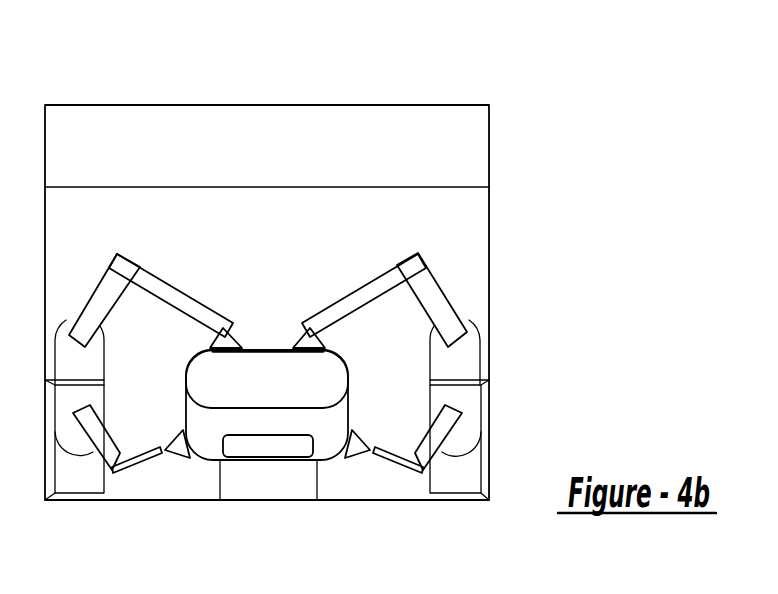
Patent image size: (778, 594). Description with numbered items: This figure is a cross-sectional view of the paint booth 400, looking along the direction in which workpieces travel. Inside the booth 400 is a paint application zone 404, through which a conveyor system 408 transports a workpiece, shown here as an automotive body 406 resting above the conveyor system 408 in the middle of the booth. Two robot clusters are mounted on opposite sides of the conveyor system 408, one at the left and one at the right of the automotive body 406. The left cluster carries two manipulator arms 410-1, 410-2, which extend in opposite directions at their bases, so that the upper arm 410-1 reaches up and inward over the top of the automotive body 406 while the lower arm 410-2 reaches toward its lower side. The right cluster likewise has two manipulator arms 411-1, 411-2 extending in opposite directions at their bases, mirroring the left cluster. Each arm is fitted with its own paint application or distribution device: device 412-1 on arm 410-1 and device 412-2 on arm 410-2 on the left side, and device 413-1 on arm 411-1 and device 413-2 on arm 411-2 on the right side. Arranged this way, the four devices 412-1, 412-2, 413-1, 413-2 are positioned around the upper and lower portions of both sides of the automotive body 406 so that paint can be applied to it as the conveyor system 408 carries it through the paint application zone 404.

The booth 400 is at (405, 105).
The paint application zone 404 is at (125, 223).
The automotive body 406 is at (285, 358).
The conveyor system 408 is at (243, 480).
The manipulator arm 410-1 is at (173, 291).
The manipulator arm 410-2 is at (134, 461).
The manipulator arm 411-1 is at (360, 297).
The manipulator arm 411-2 is at (392, 455).
The paint application device 412-1 is at (243, 338).
The paint application device 412-2 is at (182, 442).
The paint application device 413-1 is at (323, 347).
The paint application device 413-2 is at (358, 462).